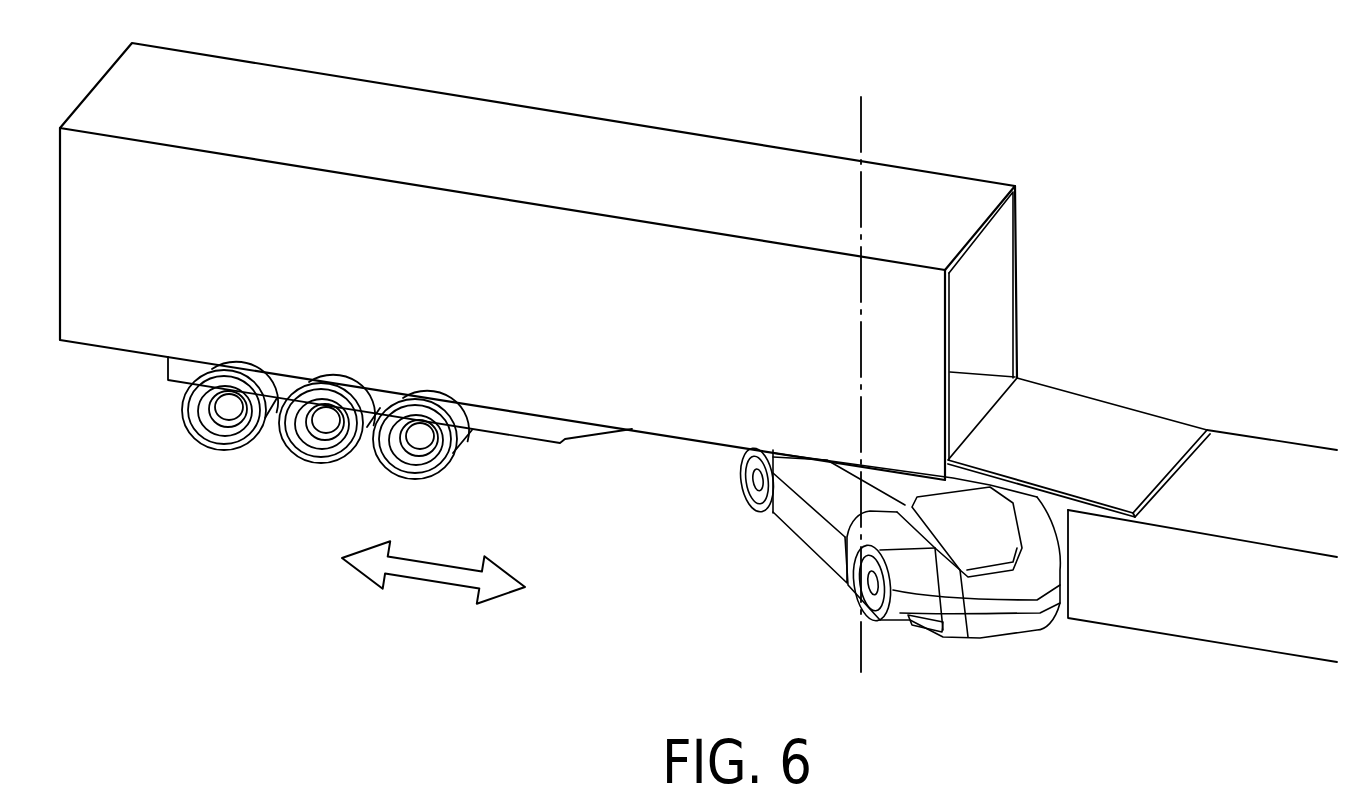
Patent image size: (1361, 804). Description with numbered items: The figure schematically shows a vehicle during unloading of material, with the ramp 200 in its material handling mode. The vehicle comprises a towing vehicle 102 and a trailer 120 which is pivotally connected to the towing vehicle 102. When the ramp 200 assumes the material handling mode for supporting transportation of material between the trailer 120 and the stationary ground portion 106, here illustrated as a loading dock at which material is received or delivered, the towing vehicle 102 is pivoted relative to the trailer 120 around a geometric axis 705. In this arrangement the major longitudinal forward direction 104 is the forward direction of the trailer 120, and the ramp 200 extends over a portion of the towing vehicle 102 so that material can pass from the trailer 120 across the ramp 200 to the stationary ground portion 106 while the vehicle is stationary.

The geometric axis 705 is at (861, 130).
The ramp 200 is at (1073, 447).
The stationary ground portion 106 is at (1242, 495).
The trailer 120 is at (490, 452).
The major longitudinal forward direction 104 is at (430, 580).
The towing vehicle 102 is at (1015, 645).